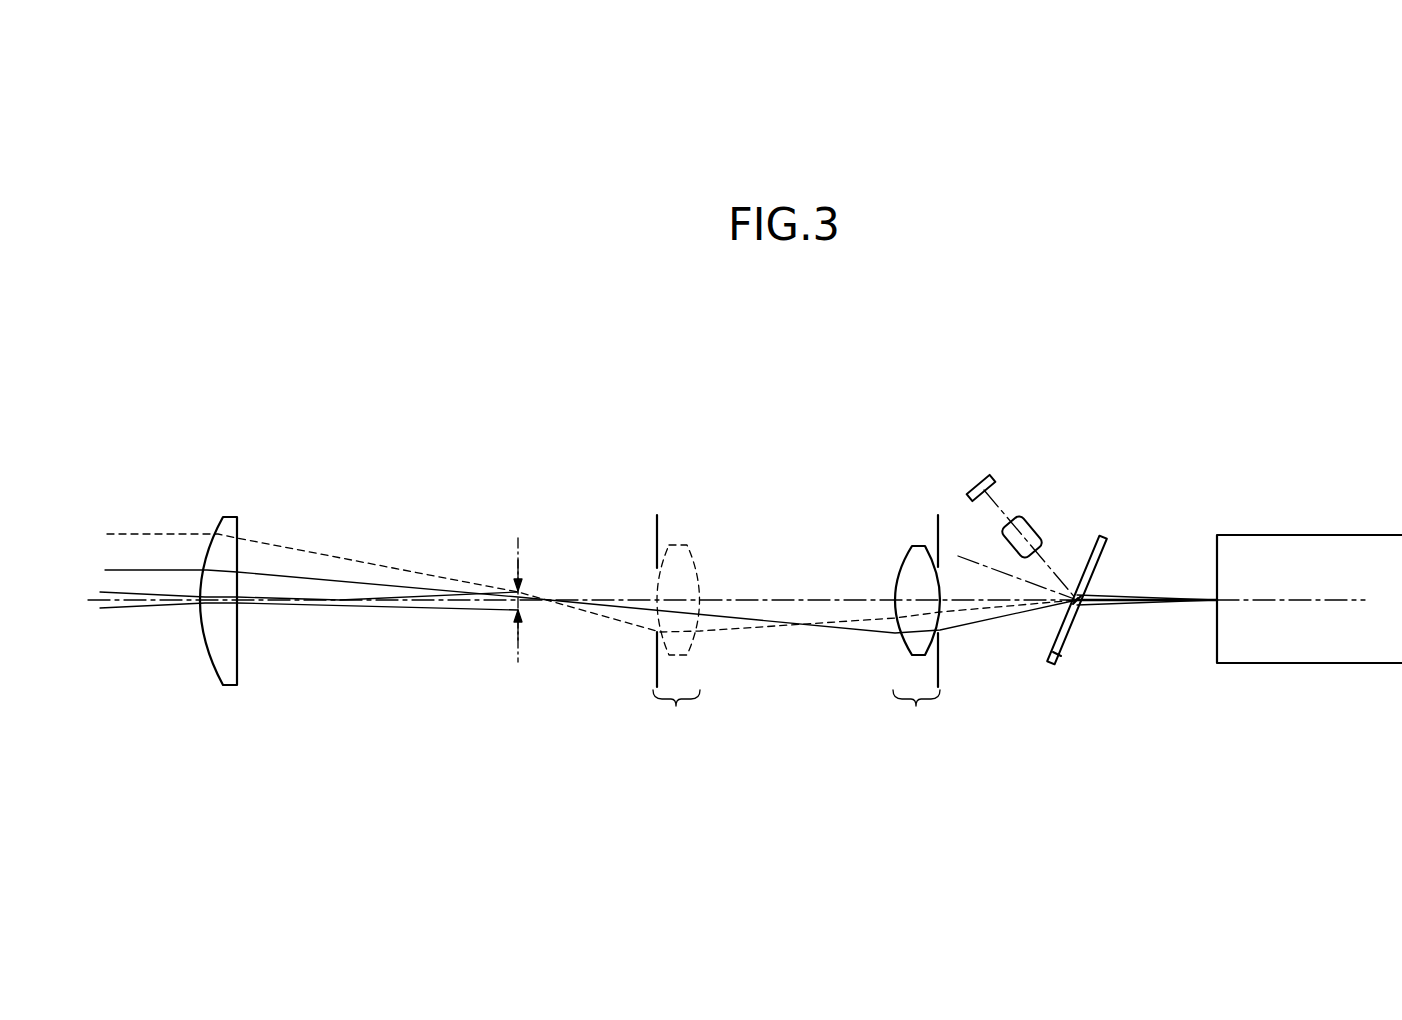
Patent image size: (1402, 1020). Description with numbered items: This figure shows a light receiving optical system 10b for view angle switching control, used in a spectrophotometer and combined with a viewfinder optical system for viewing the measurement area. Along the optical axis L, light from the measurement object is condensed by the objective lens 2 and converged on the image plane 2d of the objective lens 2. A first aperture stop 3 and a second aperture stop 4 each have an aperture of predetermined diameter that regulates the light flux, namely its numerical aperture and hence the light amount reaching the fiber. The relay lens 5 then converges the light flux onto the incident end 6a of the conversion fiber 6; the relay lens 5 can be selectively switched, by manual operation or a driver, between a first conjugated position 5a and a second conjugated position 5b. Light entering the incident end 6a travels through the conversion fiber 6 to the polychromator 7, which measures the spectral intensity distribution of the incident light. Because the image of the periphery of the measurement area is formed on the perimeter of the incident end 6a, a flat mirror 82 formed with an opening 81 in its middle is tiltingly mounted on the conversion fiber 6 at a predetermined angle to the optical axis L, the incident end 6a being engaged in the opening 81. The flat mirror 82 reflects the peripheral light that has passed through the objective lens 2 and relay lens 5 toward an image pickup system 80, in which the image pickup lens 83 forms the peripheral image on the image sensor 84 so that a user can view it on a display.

The objective lens 2 is at (222, 530).
The image plane 2d is at (518, 548).
The second aperture stop 4 is at (660, 535).
The second conjugated position 5b is at (676, 644).
The relay lens 5 is at (905, 550).
The first aperture stop 3 is at (935, 533).
The first conjugated position 5a is at (916, 715).
The optical axis L is at (770, 598).
The image sensor 84 is at (984, 469).
The image pickup lens 83 is at (1028, 522).
The image pickup system 80 is at (1022, 470).
The opening 81 is at (1062, 608).
The flat mirror 82 is at (1062, 652).
The conversion fiber 6 is at (1122, 597).
The incident end 6a is at (1088, 609).
The polychromator 7 is at (1340, 535).
The light receiving optical system 10b is at (1010, 372).